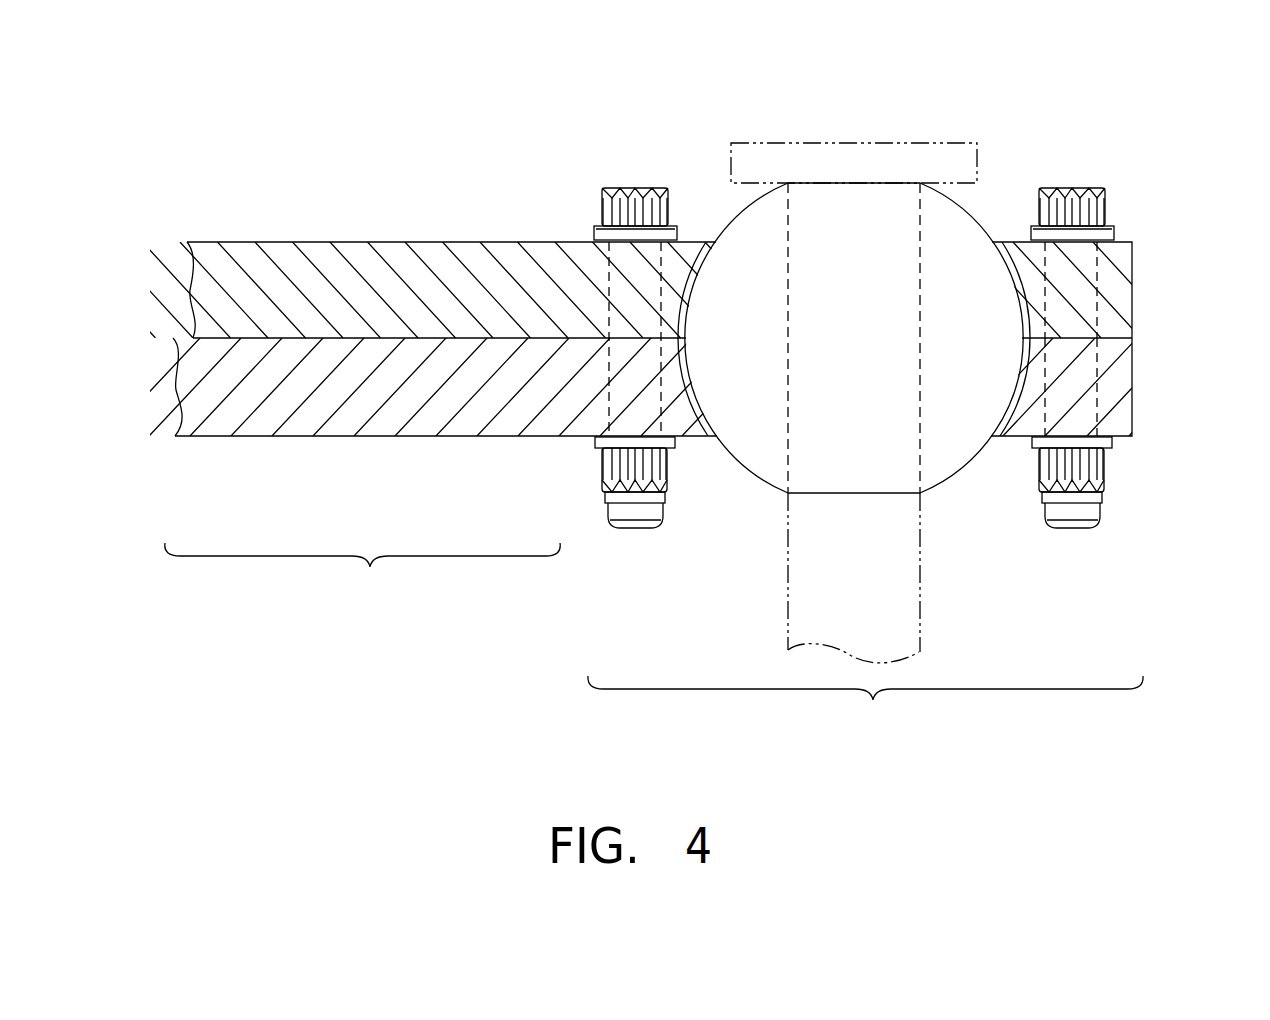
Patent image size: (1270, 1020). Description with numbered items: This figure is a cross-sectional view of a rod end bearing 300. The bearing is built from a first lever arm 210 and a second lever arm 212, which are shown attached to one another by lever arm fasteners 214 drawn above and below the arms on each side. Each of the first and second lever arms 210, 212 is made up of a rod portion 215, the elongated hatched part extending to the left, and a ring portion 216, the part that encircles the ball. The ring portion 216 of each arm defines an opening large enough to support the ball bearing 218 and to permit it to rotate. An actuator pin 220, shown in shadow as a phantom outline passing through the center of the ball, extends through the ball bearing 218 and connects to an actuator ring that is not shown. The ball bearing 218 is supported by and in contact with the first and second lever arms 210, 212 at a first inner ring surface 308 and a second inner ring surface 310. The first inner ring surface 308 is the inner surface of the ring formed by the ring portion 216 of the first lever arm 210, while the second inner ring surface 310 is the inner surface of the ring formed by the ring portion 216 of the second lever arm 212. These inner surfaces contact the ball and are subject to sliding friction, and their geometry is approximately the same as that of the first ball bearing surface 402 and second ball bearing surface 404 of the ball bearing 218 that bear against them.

The rod end bearing 300 is at (404, 105).
The first lever arm 210 is at (1120, 248).
The second lever arm 212 is at (1117, 380).
The lever arm fasteners 214 is at (630, 188).
The rod portion 215 is at (365, 574).
The ring portion 216 is at (872, 704).
The ball bearing 218 is at (882, 332).
The actuator pin 220 is at (919, 616).
The first inner ring surface 308 is at (696, 277).
The second inner ring surface 310 is at (693, 405).
The first ball bearing surface 402 is at (690, 310).
The second ball bearing surface 404 is at (690, 373).